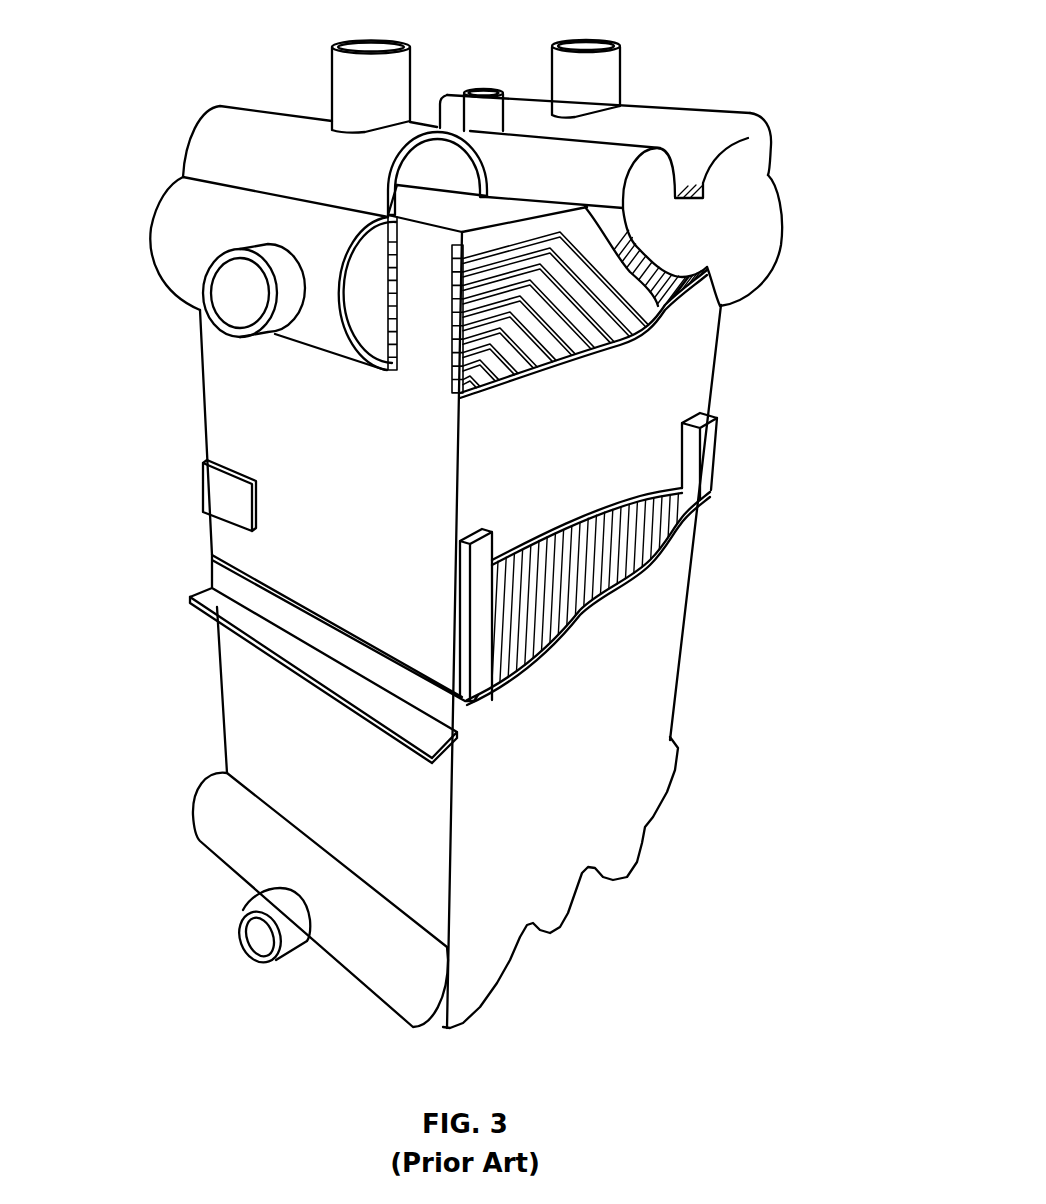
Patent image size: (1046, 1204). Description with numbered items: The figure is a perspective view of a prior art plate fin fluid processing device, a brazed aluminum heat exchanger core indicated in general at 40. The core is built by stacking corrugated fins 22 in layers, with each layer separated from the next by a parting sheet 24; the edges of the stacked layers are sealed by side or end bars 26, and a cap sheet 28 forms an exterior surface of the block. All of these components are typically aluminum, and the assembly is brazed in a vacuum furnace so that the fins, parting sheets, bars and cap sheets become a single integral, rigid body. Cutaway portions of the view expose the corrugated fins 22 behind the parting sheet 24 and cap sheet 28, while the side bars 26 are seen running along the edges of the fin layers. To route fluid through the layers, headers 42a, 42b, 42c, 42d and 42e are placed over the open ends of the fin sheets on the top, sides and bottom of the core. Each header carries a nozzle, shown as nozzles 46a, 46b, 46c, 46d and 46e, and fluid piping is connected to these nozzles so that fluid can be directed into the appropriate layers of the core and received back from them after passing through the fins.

The heat exchanger core 40 is at (110, 533).
The corrugated fins 22 is at (650, 527).
The parting sheet 24 is at (698, 375).
The side bar 26 is at (726, 457).
The cap sheet 28 is at (653, 677).
The header 42a is at (135, 233).
The header 42b is at (208, 127).
The header 42c is at (657, 183).
The header 42d is at (755, 123).
The header 42e is at (213, 858).
The nozzle 46a is at (207, 322).
The nozzle 46b is at (332, 63).
The nozzle 46c is at (485, 92).
The nozzle 46d is at (620, 60).
The nozzle 46e is at (291, 942).